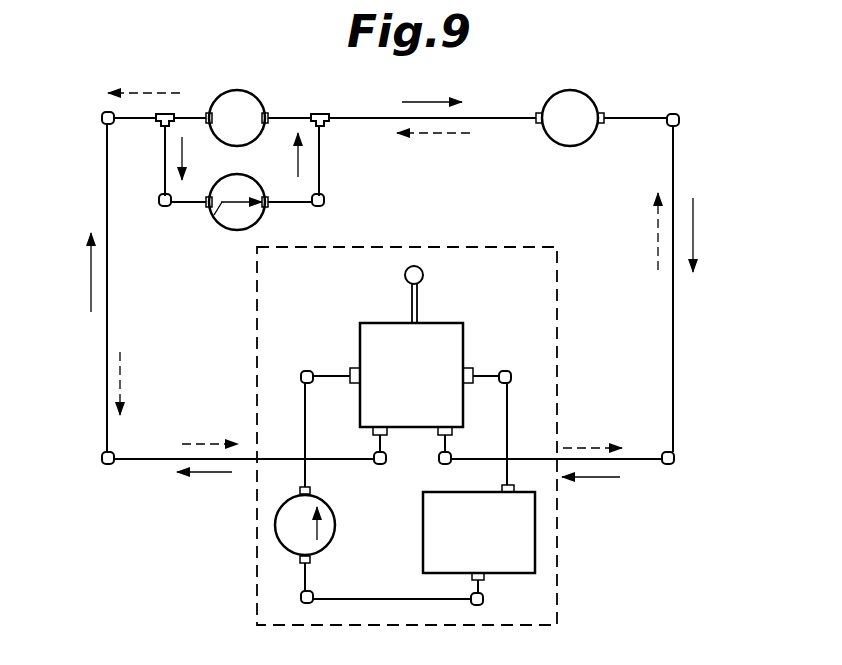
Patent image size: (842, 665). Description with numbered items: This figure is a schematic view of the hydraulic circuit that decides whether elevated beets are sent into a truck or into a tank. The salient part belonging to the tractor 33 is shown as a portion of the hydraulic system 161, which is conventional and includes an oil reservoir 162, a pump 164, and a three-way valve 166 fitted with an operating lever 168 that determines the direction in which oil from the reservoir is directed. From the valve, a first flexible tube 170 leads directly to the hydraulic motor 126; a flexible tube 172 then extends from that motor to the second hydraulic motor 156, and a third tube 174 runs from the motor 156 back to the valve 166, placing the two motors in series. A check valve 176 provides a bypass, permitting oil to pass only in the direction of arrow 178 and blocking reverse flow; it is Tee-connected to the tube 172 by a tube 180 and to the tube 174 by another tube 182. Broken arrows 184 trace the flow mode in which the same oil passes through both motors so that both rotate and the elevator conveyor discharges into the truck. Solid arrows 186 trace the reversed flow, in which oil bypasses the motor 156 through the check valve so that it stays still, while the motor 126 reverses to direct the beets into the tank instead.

The tractor 33 is at (557, 550).
The hydraulic motor 126 is at (578, 145).
The hydraulic motor 156 is at (245, 92).
The portion of the hydraulic system 161 is at (252, 356).
The oil reservoir 162 is at (423, 548).
The pump 164 is at (335, 518).
The 3-way valve 166 is at (466, 338).
The operating lever 168 is at (420, 300).
The first flexible tube 170 is at (673, 330).
The flexible tube 172 is at (492, 116).
The third tube 174 is at (105, 178).
The check valve 176 is at (263, 217).
The arrow 178 is at (212, 215).
The tube 180 is at (320, 161).
The tube 182 is at (163, 160).
The broken arrows 184 is at (152, 93).
The solid arrows 186 is at (423, 100).